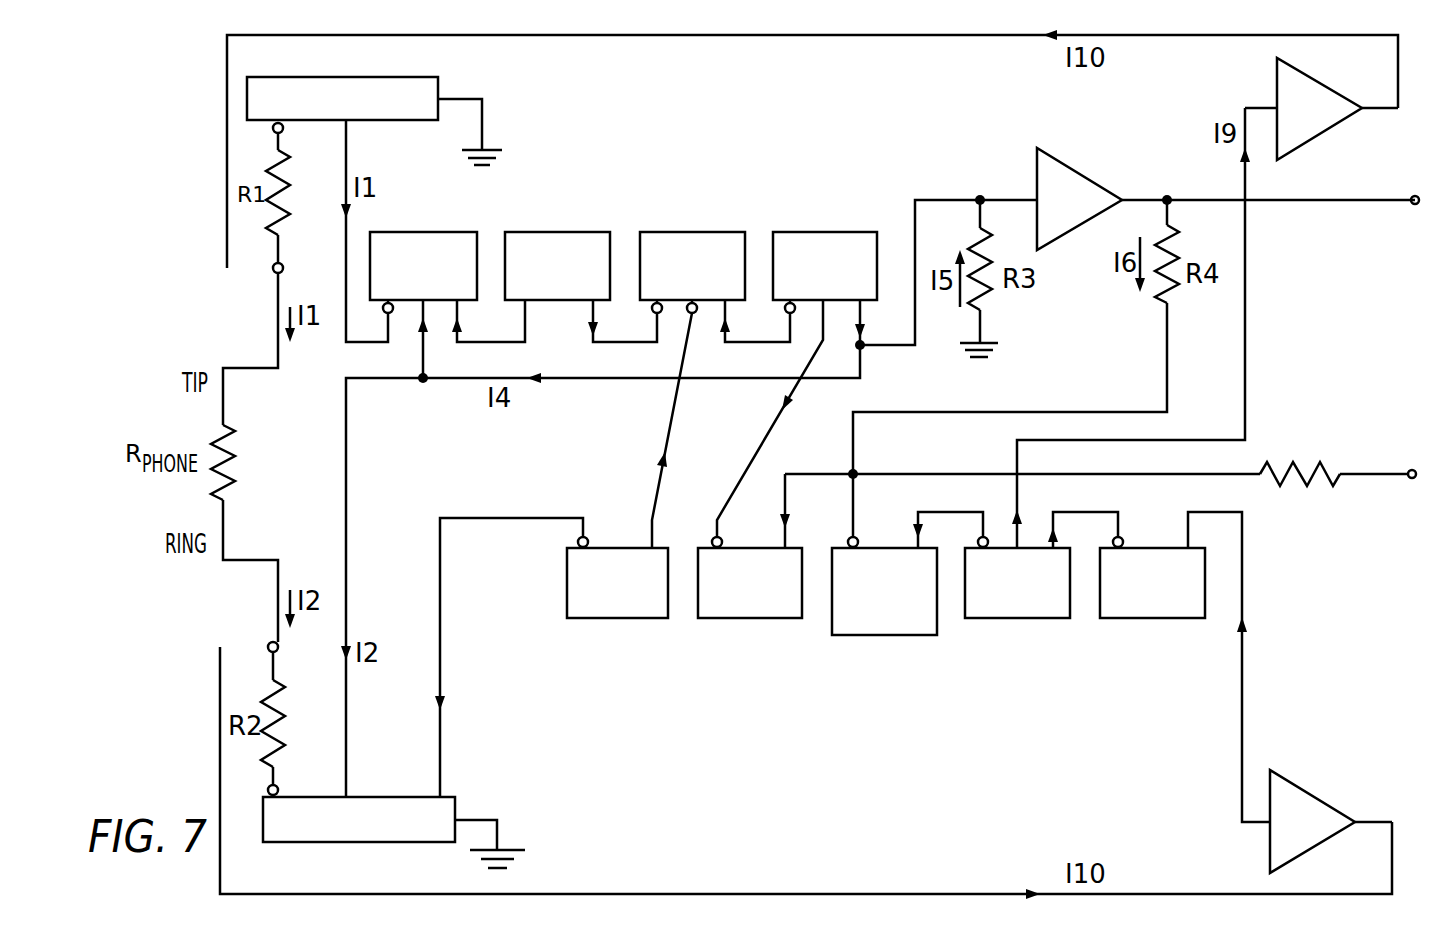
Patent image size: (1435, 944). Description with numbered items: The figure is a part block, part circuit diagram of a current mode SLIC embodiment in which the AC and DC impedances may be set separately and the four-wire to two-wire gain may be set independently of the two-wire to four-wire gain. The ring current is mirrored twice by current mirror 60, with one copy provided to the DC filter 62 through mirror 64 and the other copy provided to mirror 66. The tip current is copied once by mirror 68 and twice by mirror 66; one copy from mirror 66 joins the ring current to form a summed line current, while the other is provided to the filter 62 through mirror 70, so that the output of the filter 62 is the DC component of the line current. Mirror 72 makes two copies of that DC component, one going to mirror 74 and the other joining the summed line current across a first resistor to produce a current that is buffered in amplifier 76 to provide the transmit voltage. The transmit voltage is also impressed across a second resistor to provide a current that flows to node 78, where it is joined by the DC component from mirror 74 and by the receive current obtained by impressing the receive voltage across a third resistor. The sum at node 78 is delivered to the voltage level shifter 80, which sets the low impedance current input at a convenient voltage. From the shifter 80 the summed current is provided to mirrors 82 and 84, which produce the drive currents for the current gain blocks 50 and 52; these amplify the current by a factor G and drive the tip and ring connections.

The current gain block 50 is at (1302, 72).
The current gain block 52 is at (1295, 860).
The current mirror 60 is at (382, 797).
The DC filter 62 is at (700, 232).
The mirror 64 is at (593, 618).
The mirror 66 is at (430, 232).
The mirror 68 is at (438, 84).
The mirror 70 is at (565, 232).
The mirror 72 is at (832, 232).
The mirror 74 is at (745, 618).
The amplifier 76 is at (1063, 162).
The node 78 is at (850, 473).
The voltage level shifter 80 is at (875, 635).
The mirror 82 is at (1012, 618).
The mirror 84 is at (1143, 618).